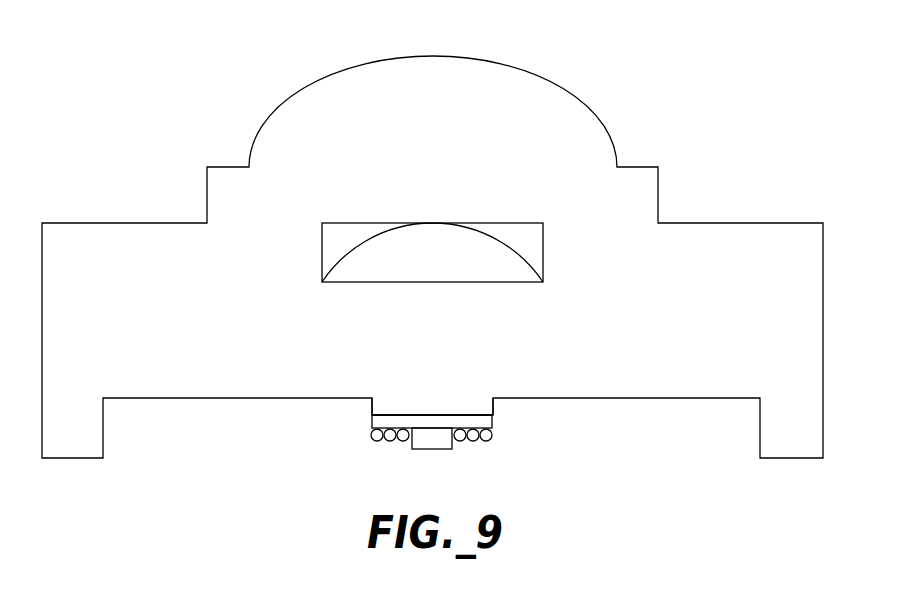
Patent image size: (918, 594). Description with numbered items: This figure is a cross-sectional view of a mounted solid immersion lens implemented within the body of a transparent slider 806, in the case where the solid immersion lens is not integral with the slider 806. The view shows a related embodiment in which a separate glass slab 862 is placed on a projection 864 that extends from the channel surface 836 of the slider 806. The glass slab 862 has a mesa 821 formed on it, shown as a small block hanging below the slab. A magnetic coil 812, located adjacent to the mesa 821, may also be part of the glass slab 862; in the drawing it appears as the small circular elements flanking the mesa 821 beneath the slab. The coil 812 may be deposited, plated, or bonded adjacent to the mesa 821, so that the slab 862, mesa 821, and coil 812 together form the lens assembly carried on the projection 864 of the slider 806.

The slider 806 is at (432, 257).
The channel surface 836 is at (193, 398).
The glass slab 862 is at (380, 419).
The projection 864 is at (422, 415).
The mesa 821 is at (431, 447).
The magnetic coil 812 is at (376, 441).